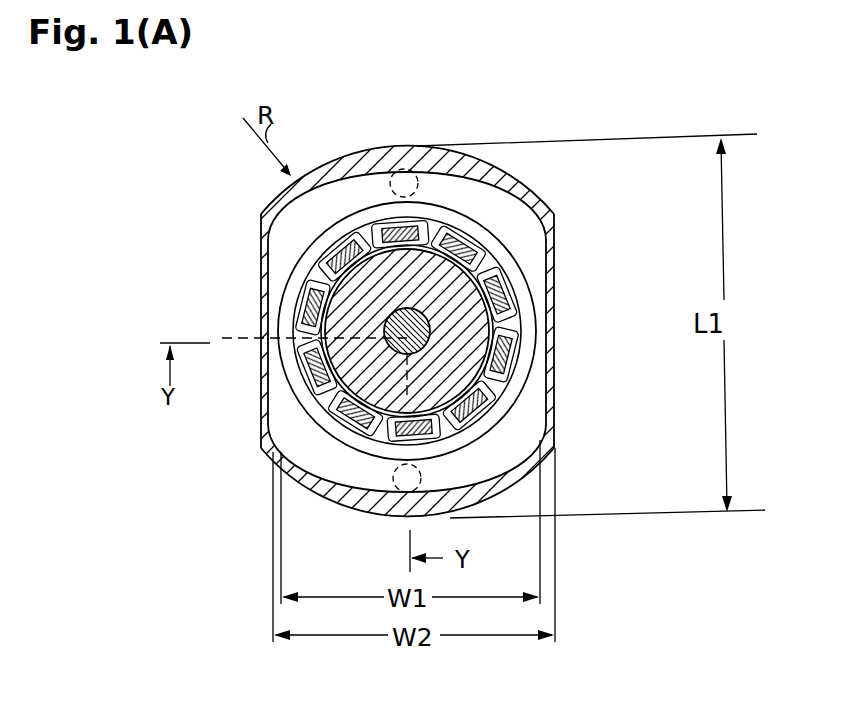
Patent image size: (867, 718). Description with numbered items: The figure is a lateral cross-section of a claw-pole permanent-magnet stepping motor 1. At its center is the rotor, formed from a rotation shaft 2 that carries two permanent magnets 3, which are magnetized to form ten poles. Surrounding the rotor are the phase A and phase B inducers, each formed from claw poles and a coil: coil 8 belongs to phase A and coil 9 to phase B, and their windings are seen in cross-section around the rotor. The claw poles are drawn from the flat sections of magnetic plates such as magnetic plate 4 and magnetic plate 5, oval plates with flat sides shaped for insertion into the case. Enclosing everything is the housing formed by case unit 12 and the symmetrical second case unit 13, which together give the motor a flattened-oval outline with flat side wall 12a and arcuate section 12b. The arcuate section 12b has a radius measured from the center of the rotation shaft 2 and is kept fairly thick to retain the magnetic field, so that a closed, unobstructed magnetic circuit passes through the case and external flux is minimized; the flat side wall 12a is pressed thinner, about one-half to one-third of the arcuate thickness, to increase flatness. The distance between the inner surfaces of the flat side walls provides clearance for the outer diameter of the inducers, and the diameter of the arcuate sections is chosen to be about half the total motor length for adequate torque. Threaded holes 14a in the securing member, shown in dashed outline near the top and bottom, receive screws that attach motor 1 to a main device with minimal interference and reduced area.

The claw-pole permanent-magnet stepping motor 1 is at (436, 315).
The rotation shaft 2 is at (403, 278).
The permanent magnets 3 is at (352, 299).
The magnetic plate 4 is at (450, 305).
The magnetic plate 5 is at (401, 309).
The coil 8 is at (458, 330).
The coil 9 is at (517, 272).
The case unit 12 is at (417, 315).
The second case unit 13 is at (417, 315).
The flat side wall 12a is at (557, 375).
The arcuate section 12b is at (552, 202).
The threaded holes 14a is at (393, 168).